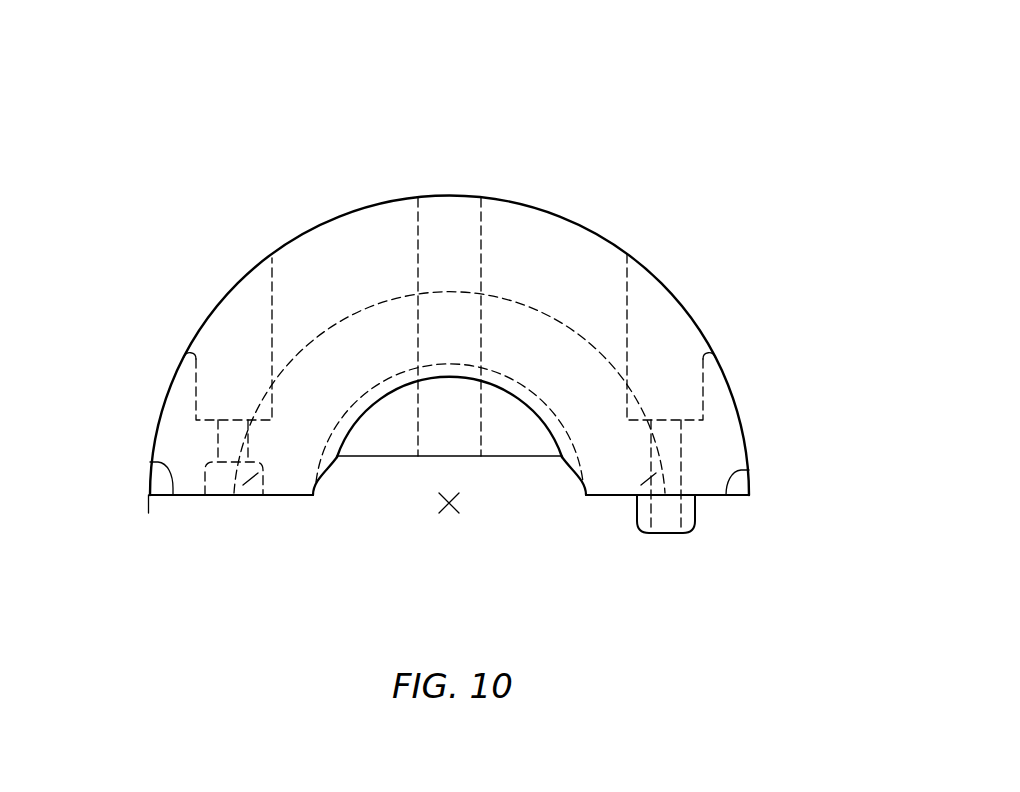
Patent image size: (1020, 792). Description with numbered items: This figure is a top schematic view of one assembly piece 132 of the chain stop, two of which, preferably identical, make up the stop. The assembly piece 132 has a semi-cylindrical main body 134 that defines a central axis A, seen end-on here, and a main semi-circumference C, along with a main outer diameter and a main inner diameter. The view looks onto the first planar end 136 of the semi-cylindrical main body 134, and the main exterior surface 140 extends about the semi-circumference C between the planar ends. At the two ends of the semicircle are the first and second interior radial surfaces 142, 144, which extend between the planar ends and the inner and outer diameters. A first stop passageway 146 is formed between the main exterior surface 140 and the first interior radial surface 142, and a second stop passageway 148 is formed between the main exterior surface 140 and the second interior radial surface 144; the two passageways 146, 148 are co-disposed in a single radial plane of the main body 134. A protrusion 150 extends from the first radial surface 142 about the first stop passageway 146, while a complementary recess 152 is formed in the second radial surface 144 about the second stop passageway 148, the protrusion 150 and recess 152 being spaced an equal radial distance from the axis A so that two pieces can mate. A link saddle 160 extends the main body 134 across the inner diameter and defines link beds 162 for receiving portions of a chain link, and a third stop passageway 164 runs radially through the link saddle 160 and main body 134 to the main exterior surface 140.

The assembly piece 132 is at (613, 70).
The semi-cylindrical main body 134 is at (575, 248).
The first planar end 136 is at (358, 361).
The main exterior surface 140 is at (377, 201).
The first interior radial surface 142 is at (748, 470).
The second interior radial surface 144 is at (148, 462).
The first stop passageway 146 is at (670, 455).
The second stop passageway 148 is at (217, 435).
The protrusion 150 is at (665, 534).
The recess 152 is at (207, 485).
The link saddle 160 is at (515, 430).
The link bed 162 is at (340, 460).
The third stop passageway 164 is at (481, 235).
The central axis A is at (449, 507).
The main semi-circumference C is at (148, 504).